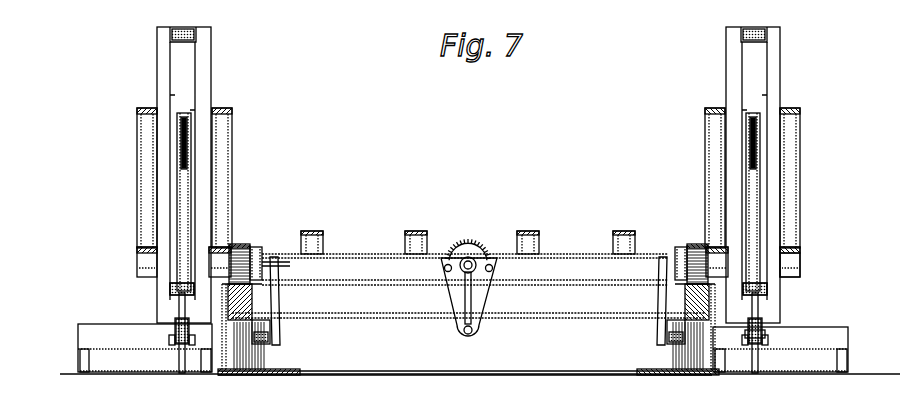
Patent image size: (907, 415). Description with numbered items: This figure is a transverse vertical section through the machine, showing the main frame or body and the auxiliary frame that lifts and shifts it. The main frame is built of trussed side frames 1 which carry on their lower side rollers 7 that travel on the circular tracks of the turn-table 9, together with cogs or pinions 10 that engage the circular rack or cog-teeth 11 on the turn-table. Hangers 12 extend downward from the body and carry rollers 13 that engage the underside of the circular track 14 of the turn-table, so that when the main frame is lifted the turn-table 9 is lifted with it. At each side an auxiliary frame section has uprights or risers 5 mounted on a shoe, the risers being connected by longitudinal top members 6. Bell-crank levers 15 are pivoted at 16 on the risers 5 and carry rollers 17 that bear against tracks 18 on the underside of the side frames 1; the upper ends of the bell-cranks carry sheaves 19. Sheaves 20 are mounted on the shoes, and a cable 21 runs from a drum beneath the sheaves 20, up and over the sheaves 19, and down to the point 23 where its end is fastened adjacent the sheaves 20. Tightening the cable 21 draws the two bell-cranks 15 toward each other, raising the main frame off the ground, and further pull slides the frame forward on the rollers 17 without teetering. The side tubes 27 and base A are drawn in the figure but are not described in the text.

The side frames 1 is at (212, 158).
The uprights or risers 5 is at (212, 99).
The longitudinal top members 6 is at (192, 27).
The rollers 7 is at (249, 253).
The turn-table 9 is at (233, 308).
The cogs or pinions 10 is at (240, 249).
The circular rack or cog-teeth 11 is at (268, 258).
The hangers 12 is at (278, 318).
The rollers 13 is at (479, 331).
The circular track 14 is at (272, 330).
The bell-crank levers 15 is at (190, 190).
The pivot 16 is at (768, 288).
The rollers 17 is at (801, 264).
The tracks 18 is at (140, 255).
The sheaves 19 is at (190, 128).
The sheaves 20 is at (176, 332).
The cable 21 is at (178, 305).
The fastening point 23 is at (764, 333).
The side tube 27 is at (148, 108).
The base A is at (95, 345).